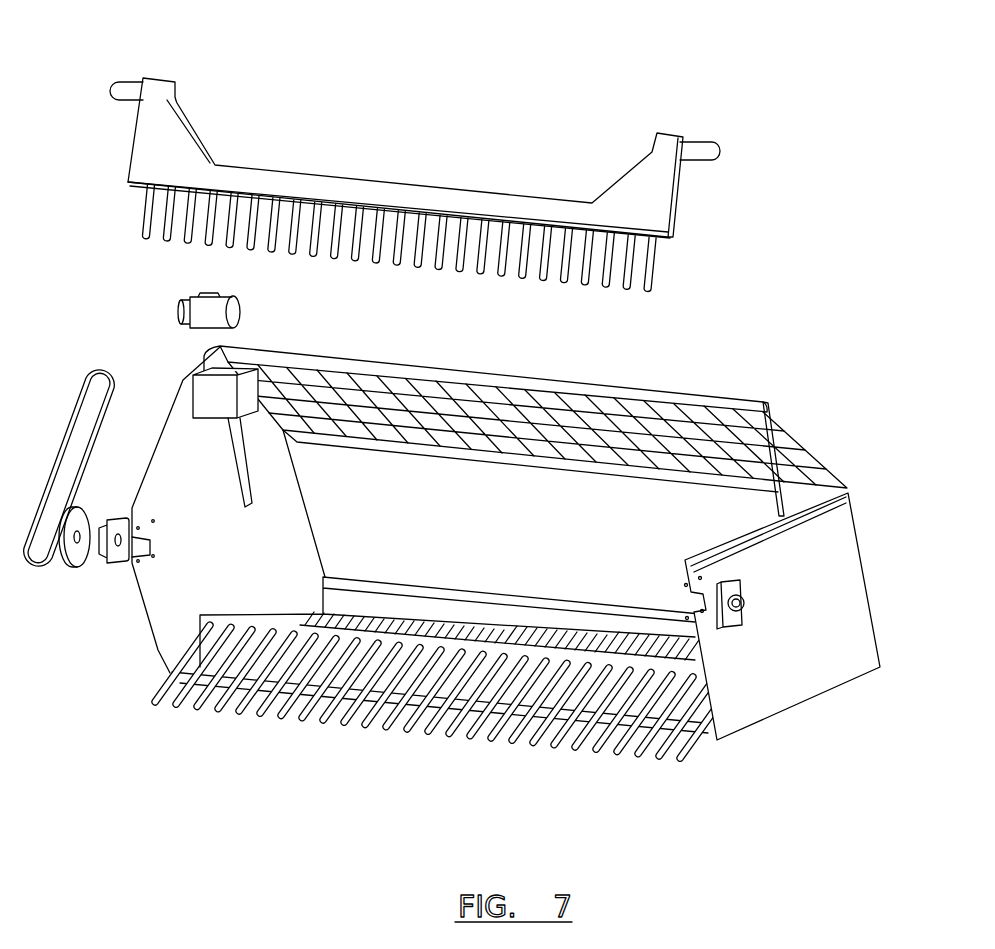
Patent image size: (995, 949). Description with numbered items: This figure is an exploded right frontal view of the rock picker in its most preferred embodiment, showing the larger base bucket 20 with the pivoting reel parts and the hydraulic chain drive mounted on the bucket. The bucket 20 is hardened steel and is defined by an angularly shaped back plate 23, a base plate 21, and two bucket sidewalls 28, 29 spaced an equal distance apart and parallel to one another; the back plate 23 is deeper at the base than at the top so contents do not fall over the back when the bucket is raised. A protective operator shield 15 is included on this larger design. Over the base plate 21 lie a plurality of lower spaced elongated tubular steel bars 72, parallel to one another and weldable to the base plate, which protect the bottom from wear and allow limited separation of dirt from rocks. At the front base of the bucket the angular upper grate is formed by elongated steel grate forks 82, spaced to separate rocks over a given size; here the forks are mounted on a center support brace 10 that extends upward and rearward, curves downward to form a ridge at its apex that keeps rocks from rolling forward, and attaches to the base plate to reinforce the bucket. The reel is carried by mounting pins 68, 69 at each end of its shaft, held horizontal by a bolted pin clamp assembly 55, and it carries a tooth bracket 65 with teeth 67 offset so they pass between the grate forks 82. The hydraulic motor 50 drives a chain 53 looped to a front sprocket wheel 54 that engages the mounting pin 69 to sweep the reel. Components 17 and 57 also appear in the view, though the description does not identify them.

The center support brace 10 is at (192, 700).
The protective operator shield 15 is at (795, 437).
The top frame rail 17 is at (360, 357).
The bucket 20 is at (780, 713).
The base plate 21 is at (445, 727).
The back plate 23 is at (538, 523).
The bucket sidewall 28 is at (187, 527).
The bucket sidewall 29 is at (790, 642).
The hydraulic motor 50 is at (240, 305).
The chain 53 is at (60, 443).
The front sprocket wheel 54 is at (77, 567).
The pin clamp assembly 55 is at (118, 575).
The junction box 57 is at (203, 362).
The tooth bracket 65 is at (150, 152).
The teeth 67 is at (145, 220).
The mounting pin 68 is at (702, 142).
The mounting pin 69 is at (128, 80).
The lower spaced elongated tubular steel bars 72 is at (648, 737).
The grate forks 82 is at (548, 743).